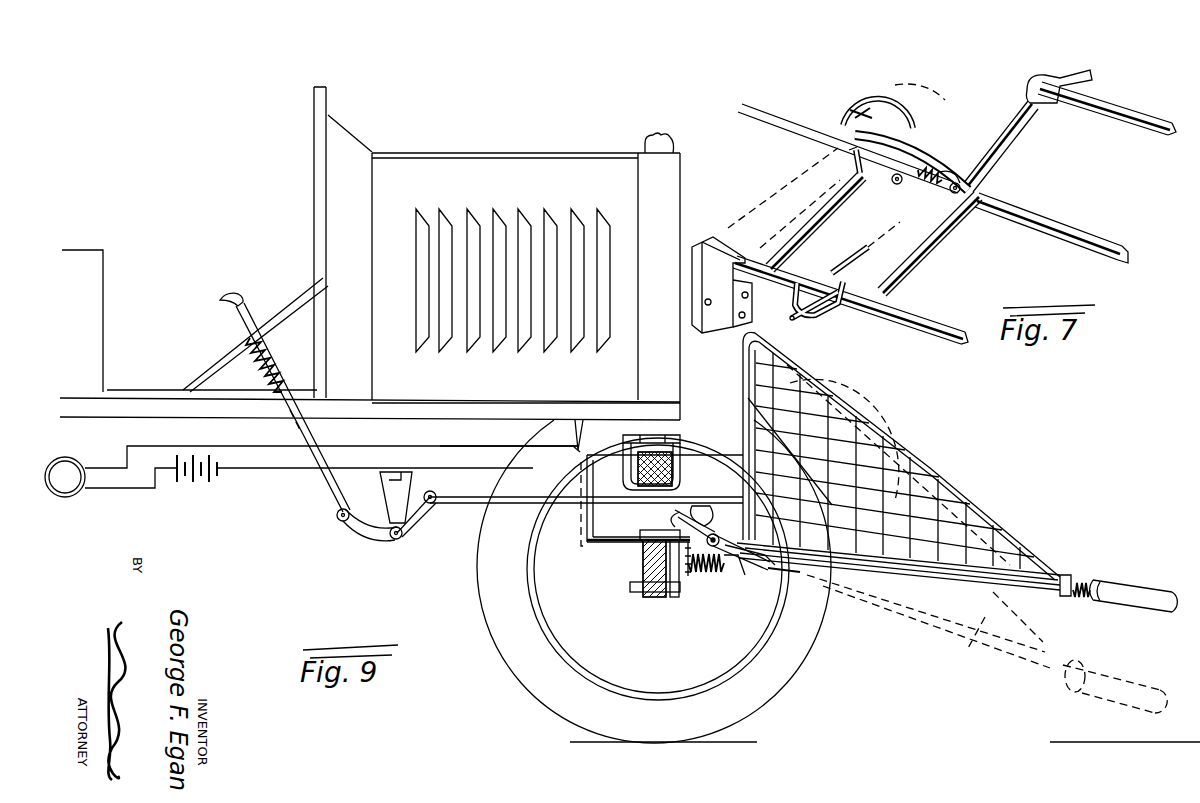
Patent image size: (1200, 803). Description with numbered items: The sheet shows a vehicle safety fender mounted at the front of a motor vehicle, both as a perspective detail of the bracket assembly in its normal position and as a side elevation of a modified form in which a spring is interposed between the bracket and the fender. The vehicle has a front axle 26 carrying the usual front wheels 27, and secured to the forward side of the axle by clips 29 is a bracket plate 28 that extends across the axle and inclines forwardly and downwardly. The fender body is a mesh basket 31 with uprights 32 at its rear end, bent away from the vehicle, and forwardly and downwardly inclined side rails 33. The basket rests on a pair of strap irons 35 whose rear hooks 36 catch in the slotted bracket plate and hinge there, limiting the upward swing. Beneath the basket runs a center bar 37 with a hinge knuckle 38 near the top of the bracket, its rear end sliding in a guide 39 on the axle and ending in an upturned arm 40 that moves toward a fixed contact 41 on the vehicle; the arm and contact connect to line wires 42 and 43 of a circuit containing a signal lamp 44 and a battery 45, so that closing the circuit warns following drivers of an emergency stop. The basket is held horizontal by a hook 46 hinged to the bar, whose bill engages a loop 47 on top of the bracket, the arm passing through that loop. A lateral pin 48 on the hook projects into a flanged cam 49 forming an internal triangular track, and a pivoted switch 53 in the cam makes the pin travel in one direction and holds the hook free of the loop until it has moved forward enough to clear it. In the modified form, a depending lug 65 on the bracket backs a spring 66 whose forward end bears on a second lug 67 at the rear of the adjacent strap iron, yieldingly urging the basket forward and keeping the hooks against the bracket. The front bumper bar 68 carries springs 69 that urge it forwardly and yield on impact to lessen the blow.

In FIG. 9, the front axle 26 is at (476, 172).
In FIG. 7, the front axle 26 is at (773, 201).
In FIG. 9, the front wheels 27 is at (817, 636).
In FIG. 9, the bracket plate 28 is at (795, 527).
In FIG. 7, the bracket plate 28 is at (925, 216).
In FIG. 9, the clips 29 is at (643, 565).
In FIG. 7, the clips 29 is at (708, 245).
In FIG. 9, the basket 31 is at (932, 483).
In FIG. 7, the basket 31 is at (806, 312).
In FIG. 9, the uprights 32 is at (700, 442).
In FIG. 9, the side rails 33 is at (887, 434).
In FIG. 9, the strap irons 35 is at (800, 578).
In FIG. 7, the strap irons 35 is at (913, 312).
In FIG. 9, the hooks 36 is at (782, 548).
In FIG. 7, the hooks 36 is at (1028, 98).
In FIG. 9, the center bar 37 is at (863, 568).
In FIG. 7, the center bar 37 is at (1045, 226).
In FIG. 9, the hinge knuckle 38 is at (717, 533).
In FIG. 7, the hinge knuckle 38 is at (880, 188).
In FIG. 9, the guide 39 is at (646, 531).
In FIG. 9, the upturned arm 40 is at (590, 517).
In FIG. 7, the upturned arm 40 is at (770, 106).
In FIG. 9, the fixed contact 41 is at (577, 449).
In FIG. 9, the line wire 42 is at (470, 449).
In FIG. 9, the line wire 43 is at (470, 474).
In FIG. 9, the signal lamp 44 is at (80, 494).
In FIG. 9, the battery 45 is at (196, 484).
In FIG. 9, the hook 46 is at (790, 507).
In FIG. 7, the hook 46 is at (926, 146).
In FIG. 9, the loop 47 is at (693, 532).
In FIG. 7, the loop 47 is at (835, 155).
In FIG. 7, the pin 48 is at (843, 128).
In FIG. 9, the cam 49 is at (701, 506).
In FIG. 7, the cam 49 is at (872, 90).
In FIG. 7, the switch 53 is at (852, 98).
In FIG. 9, the depending lug 65 is at (688, 580).
In FIG. 9, the spring 66 is at (704, 578).
In FIG. 9, the second lug 67 is at (727, 572).
In FIG. 9, the bumper bar 68 is at (1125, 582).
In FIG. 9, the spring 69 is at (1080, 582).